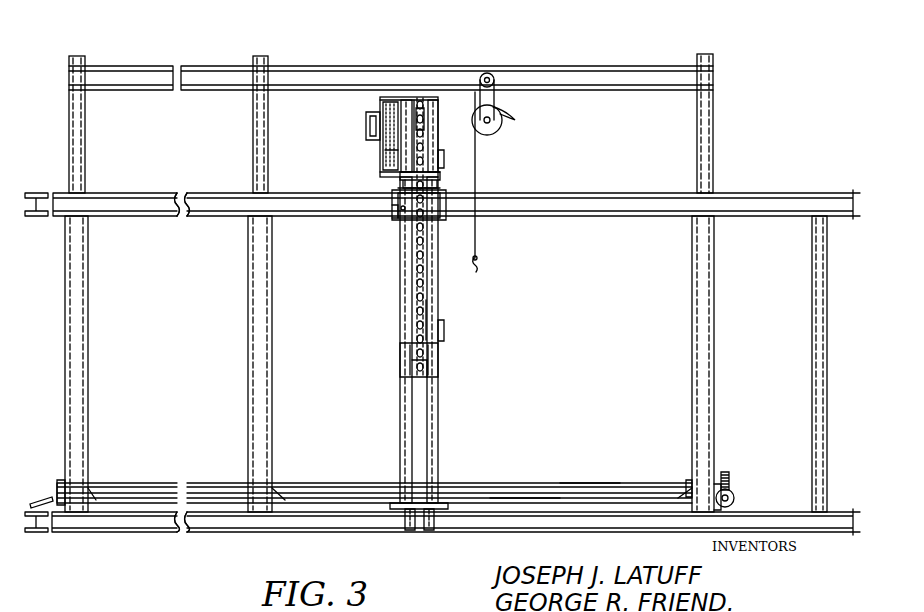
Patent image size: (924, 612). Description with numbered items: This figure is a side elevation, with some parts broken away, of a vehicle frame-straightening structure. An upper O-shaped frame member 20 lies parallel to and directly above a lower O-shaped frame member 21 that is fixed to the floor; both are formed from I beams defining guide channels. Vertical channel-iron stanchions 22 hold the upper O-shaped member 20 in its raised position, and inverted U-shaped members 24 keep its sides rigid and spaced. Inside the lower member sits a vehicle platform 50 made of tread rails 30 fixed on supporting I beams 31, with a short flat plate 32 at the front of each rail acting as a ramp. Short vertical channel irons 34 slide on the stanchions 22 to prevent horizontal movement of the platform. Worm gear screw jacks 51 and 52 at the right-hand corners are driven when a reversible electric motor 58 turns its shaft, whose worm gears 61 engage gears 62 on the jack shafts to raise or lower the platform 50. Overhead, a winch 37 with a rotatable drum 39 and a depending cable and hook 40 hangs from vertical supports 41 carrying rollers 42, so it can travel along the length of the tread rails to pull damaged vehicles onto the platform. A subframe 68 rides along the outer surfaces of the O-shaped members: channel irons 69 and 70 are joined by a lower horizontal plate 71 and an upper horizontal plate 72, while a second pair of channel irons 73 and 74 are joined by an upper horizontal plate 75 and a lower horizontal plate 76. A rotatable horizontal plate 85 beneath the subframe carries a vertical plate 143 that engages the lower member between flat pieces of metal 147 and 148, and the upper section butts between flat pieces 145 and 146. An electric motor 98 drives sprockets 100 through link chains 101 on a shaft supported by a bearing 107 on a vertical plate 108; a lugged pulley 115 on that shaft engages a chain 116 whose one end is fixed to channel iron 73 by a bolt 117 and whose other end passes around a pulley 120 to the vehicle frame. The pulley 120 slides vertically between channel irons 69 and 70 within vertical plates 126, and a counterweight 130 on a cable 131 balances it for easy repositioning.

The upper O-shaped frame member 20 is at (740, 188).
The lower O-shaped frame member 21 is at (752, 510).
The stanchion 22 is at (88, 346).
The inverted U-shaped member 24 is at (85, 138).
The tread rail 30 is at (583, 485).
The supporting I beam 31 is at (495, 498).
The short flat plate 32 is at (42, 495).
The vertical channel iron 34 is at (280, 493).
The winch 37 is at (503, 115).
The drum 39 is at (500, 128).
The cable and hook 40 is at (478, 262).
The vertical support 41 is at (496, 96).
The roller 42 is at (487, 73).
The platform 50 is at (543, 478).
The worm gear screw jack 51 is at (92, 483).
The worm gear screw jack 52 is at (689, 480).
The reversible electric motor 58 is at (735, 492).
The worm gear 61 is at (728, 490).
The gear 62 is at (727, 470).
The subframe 68 is at (421, 340).
The channel iron 69 is at (400, 423).
The channel iron 70 is at (438, 425).
The lower horizontal plate 71 is at (412, 510).
The upper horizontal plate 72 is at (442, 218).
The channel iron 73 is at (406, 100).
The channel iron 74 is at (438, 112).
The upper horizontal plate 75 is at (418, 100).
The lower horizontal plate 76 is at (440, 178).
The horizontal plate 85 is at (434, 512).
The electric motor 98 is at (444, 160).
The sprocket 100 is at (383, 110).
The link chain 101 is at (383, 150).
The bearing 107 is at (366, 125).
The vertical plate 108 is at (380, 135).
The pulley 115 is at (424, 112).
The chain 116 is at (410, 270).
The bolt 117 is at (400, 208).
The pulley 120 is at (412, 375).
The vertical plate 126 is at (400, 362).
The counterweight 130 is at (444, 331).
The cable 131 is at (428, 310).
The vertical plate 143 is at (398, 509).
The flat piece of metal 145 is at (180, 190).
The flat piece of metal 146 is at (188, 218).
The flat piece of metal 147 is at (205, 495).
The flat piece of metal 148 is at (192, 533).